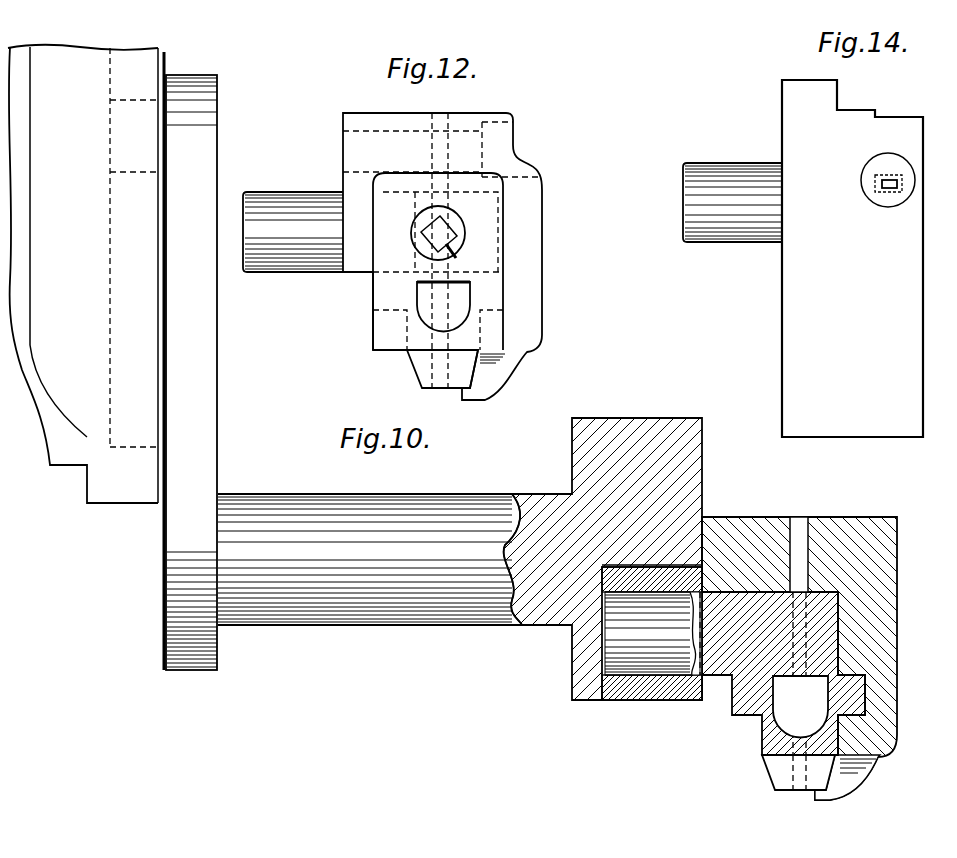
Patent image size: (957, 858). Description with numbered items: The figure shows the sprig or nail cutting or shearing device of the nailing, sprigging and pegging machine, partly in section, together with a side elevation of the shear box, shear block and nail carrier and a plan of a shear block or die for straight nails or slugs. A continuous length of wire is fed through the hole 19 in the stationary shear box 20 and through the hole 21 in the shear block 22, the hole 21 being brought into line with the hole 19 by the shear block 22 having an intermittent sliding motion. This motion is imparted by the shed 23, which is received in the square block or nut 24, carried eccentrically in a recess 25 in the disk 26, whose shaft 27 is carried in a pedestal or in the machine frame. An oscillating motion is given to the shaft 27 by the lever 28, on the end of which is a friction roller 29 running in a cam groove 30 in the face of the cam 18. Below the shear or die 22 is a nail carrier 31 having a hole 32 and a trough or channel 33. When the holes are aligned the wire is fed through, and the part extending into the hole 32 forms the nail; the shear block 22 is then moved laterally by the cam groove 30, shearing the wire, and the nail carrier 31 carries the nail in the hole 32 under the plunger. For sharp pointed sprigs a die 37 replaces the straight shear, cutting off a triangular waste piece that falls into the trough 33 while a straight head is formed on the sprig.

In FIG. 10, the cam 18 is at (83, 274).
In FIG. 10, the hole 19 is at (798, 523).
In FIG. 12, the hole 19 is at (434, 116).
In FIG. 10, the shear box 20 is at (885, 570).
In FIG. 12, the shear box 20 is at (442, 256).
In FIG. 10, the hole 21 is at (808, 631).
In FIG. 12, the hole 21 is at (447, 188).
In FIG. 14, the hole 21 is at (886, 178).
In FIG. 10, the shear block 22 is at (725, 640).
In FIG. 12, the shear block 22 is at (357, 262).
In FIG. 14, the shear block 22 is at (852, 258).
In FIG. 10, the shed 23 is at (618, 620).
In FIG. 12, the shed 23 is at (280, 193).
In FIG. 14, the shed 23 is at (725, 170).
In FIG. 10, the square block or nut 24 is at (632, 703).
In FIG. 10, the recess 25 is at (604, 702).
In FIG. 10, the disk 26 is at (627, 432).
In FIG. 10, the shaft 27 is at (370, 559).
In FIG. 10, the lever 28 is at (190, 361).
In FIG. 10, the friction roller 29 is at (122, 176).
In FIG. 10, the cam groove 30 is at (110, 272).
In FIG. 10, the nail carrier 31 is at (798, 772).
In FIG. 12, the nail carrier 31 is at (442, 369).
In FIG. 10, the hole 32 is at (802, 792).
In FIG. 10, the trough or channel 33 is at (800, 706).
In FIG. 12, the trough or channel 33 is at (443, 307).
In FIG. 12, the die 37 is at (456, 258).